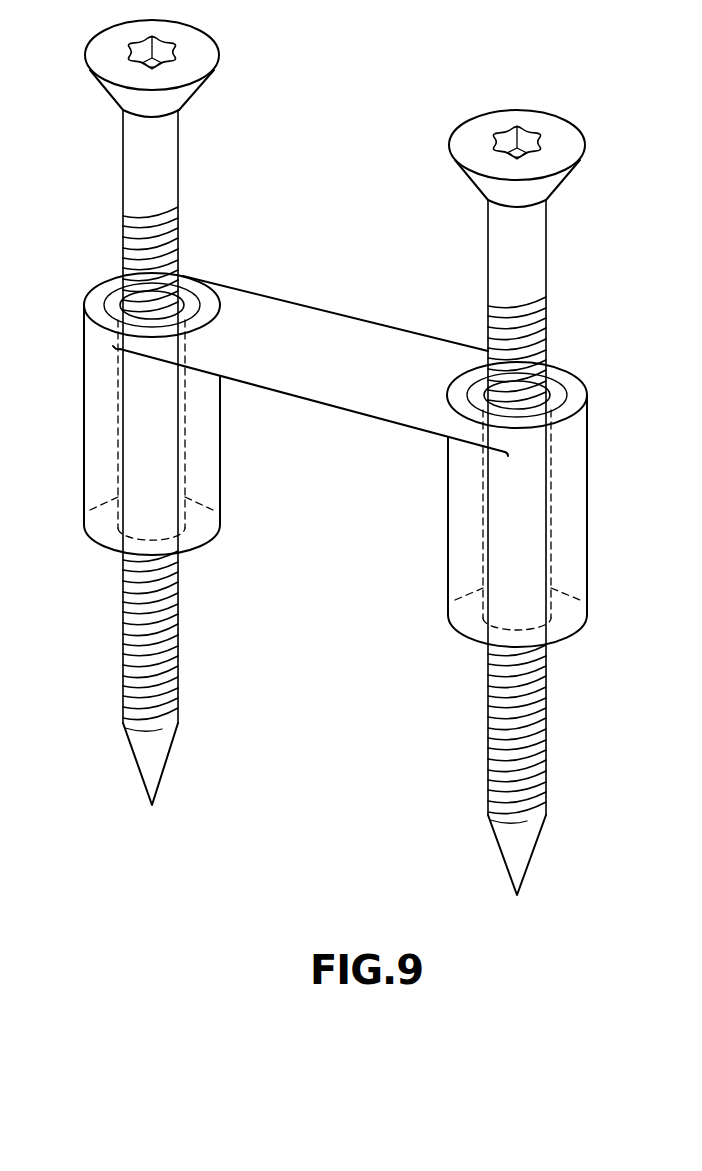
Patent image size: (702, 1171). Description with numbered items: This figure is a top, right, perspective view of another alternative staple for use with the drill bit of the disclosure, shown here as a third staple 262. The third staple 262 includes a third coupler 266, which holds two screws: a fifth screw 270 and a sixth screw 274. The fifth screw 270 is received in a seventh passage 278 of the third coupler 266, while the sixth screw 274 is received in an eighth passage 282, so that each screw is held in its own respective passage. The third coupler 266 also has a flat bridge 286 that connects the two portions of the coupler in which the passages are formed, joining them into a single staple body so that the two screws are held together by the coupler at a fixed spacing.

The third staple 262 is at (66, 228).
The third coupler 266 is at (82, 431).
The fifth screw 270 is at (152, 184).
The sixth screw 274 is at (495, 276).
The seventh passage 278 is at (180, 308).
The eighth passage 282 is at (484, 394).
The flat bridge 286 is at (340, 336).